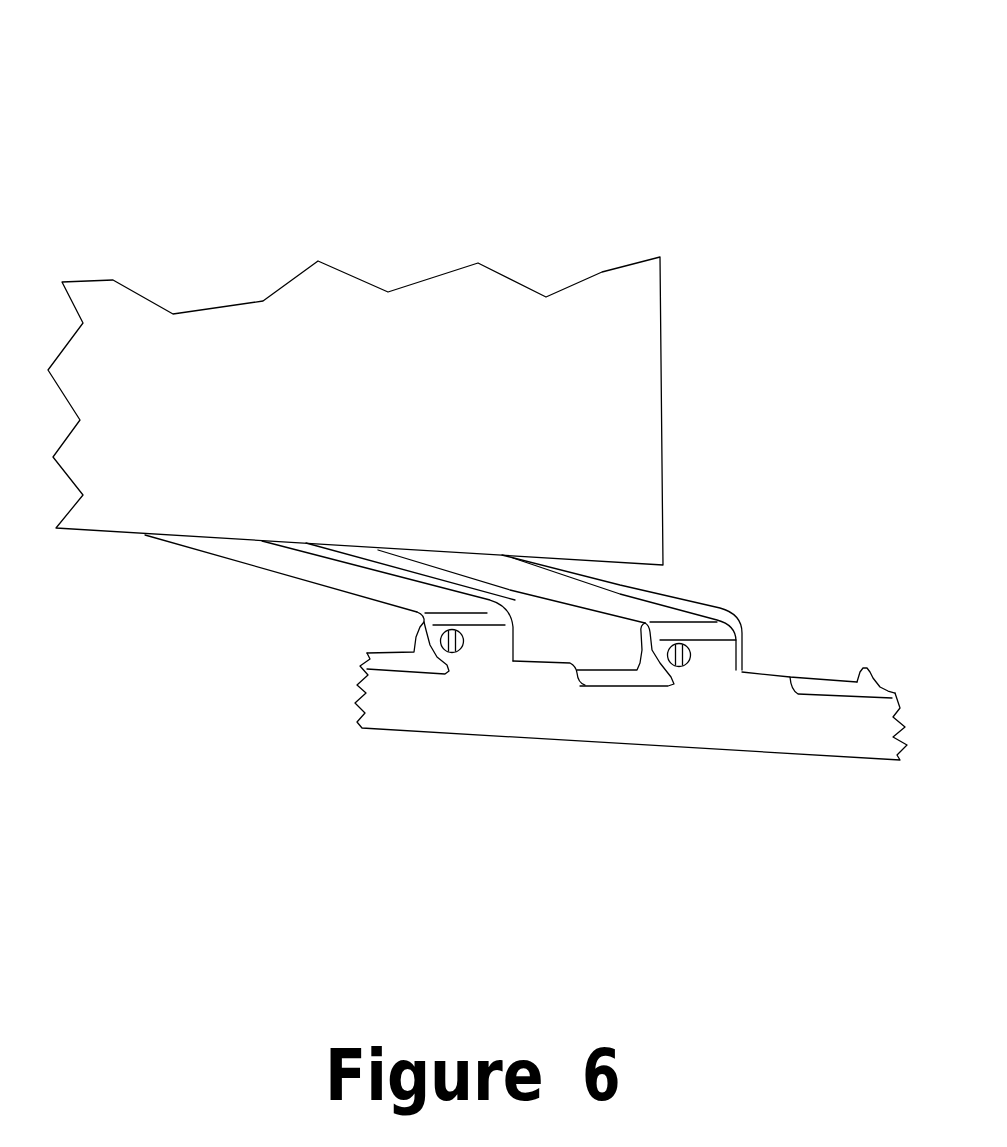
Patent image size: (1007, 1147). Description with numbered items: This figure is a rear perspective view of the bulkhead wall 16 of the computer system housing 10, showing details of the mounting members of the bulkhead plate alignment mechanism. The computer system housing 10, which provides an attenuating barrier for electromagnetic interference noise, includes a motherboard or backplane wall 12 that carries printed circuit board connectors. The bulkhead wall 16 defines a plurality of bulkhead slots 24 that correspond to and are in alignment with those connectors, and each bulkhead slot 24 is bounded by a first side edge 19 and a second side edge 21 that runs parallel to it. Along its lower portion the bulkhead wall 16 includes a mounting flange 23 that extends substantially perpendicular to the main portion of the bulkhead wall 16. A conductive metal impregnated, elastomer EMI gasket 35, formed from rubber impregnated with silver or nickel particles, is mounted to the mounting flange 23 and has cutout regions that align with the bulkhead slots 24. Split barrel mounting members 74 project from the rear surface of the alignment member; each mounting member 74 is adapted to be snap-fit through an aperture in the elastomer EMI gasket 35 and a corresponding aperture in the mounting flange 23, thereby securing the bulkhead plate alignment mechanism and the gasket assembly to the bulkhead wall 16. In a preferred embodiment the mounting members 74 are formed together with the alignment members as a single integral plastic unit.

The computer system housing 10 is at (137, 142).
The backplane wall 12 is at (452, 323).
The bulkhead wall 16 is at (262, 560).
The first side edge 19 is at (638, 618).
The second side edge 21 is at (388, 577).
The mounting flange 23 is at (862, 743).
The bulkhead slot 24 is at (777, 647).
The elastomer EMI gasket 35 is at (426, 676).
The split barrel mounting member 74 is at (462, 647).